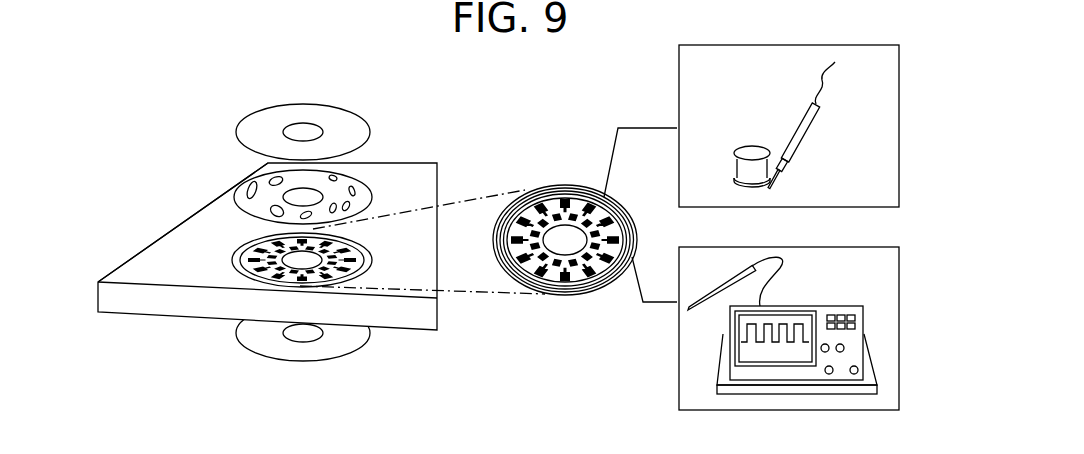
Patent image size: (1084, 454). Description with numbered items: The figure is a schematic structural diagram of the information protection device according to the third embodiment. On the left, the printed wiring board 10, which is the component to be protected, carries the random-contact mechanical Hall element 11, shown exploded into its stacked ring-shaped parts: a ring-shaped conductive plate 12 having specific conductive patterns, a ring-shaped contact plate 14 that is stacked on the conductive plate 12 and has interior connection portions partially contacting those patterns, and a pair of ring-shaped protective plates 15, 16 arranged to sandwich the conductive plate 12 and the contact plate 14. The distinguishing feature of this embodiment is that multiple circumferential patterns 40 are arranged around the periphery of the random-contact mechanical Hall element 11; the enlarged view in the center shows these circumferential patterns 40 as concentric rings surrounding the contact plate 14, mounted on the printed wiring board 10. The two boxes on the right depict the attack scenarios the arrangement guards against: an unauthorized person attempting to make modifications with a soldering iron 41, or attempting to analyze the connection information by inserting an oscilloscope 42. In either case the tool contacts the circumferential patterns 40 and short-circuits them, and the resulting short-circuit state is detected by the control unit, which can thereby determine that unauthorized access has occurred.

The printed wiring board 10 is at (398, 312).
The random-contact mechanical Hall element 11 is at (104, 83).
The ring-shaped conductive plate 12 is at (236, 195).
The ring-shaped contact plate 14 is at (371, 247).
The ring-shaped protective plate 15 is at (240, 122).
The ring-shaped protective plate 16 is at (235, 330).
The circumferential patterns 40 is at (579, 191).
The soldering iron 41 is at (921, 112).
The oscilloscope 42 is at (921, 327).